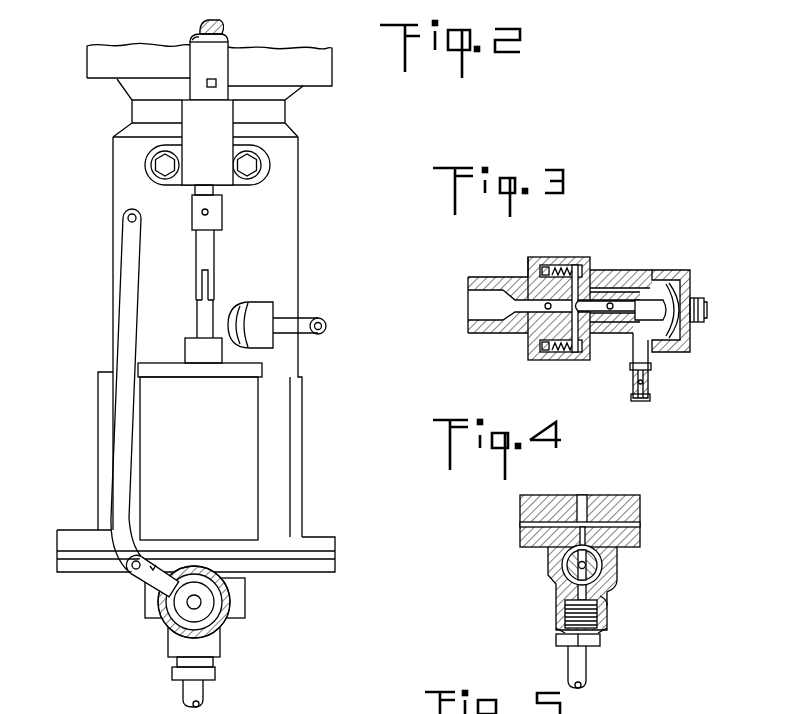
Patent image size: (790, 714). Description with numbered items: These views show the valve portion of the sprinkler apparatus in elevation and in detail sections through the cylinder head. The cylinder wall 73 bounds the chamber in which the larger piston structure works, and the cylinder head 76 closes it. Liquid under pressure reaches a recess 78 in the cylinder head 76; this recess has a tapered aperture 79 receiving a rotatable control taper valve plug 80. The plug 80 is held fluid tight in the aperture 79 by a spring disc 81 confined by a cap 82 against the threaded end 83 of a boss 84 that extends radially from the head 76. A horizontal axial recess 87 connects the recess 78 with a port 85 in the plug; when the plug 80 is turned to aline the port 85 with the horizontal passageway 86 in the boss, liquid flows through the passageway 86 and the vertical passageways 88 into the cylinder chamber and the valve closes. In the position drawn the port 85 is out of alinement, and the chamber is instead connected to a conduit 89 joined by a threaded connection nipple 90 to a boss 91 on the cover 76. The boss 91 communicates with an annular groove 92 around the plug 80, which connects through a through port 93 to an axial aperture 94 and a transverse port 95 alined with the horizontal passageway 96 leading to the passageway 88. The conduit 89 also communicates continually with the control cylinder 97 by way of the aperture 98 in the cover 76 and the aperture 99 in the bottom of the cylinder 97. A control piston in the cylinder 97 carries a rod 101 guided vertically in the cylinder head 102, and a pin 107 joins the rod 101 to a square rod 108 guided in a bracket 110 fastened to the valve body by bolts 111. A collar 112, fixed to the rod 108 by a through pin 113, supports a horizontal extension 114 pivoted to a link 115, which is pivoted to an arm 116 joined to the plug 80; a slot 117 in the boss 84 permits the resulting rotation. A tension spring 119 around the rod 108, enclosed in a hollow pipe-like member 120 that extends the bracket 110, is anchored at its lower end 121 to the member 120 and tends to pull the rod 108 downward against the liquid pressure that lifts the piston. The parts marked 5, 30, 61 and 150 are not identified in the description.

In FIG. 2, the mounting plate 5 is at (87, 54).
In FIG. 2, the housing neck flange 30 is at (125, 90).
In FIG. 2, the compartment 61 is at (243, 256).
In FIG. 2, the wall 73 is at (292, 441).
In FIG. 2, the cylinder head 76 is at (337, 580).
In FIG. 4, the cylinder head 76 is at (642, 546).
In FIG. 3, the recess 78 is at (476, 305).
In FIG. 3, the tapered aperture 79 is at (602, 336).
In FIG. 4, the tapered aperture 79 is at (604, 572).
In FIG. 2, the control taper valve plug 80 is at (210, 601).
In FIG. 3, the control taper valve plug 80 is at (605, 302).
In FIG. 4, the control taper valve plug 80 is at (566, 566).
In FIG. 3, the spring disc 81 is at (682, 296).
In FIG. 3, the cap 82 is at (692, 280).
In FIG. 3, the threaded end 83 is at (655, 270).
In FIG. 2, the boss 84 is at (226, 618).
In FIG. 3, the boss 84 is at (636, 284).
In FIG. 4, the boss 84 is at (606, 580).
In FIG. 3, the port 85 is at (520, 275).
In FIG. 3, the horizontal passageway 86 is at (548, 262).
In FIG. 3, the horizontal axial recess 87 is at (510, 296).
In FIG. 3, the vertical passageways 88 is at (556, 266).
In FIG. 2, the conduit 89 is at (206, 695).
In FIG. 4, the conduit 89 is at (588, 678).
In FIG. 2, the threaded connection nipple 90 is at (218, 673).
In FIG. 4, the threaded connection nipple 90 is at (558, 638).
In FIG. 2, the boss 91 is at (221, 651).
In FIG. 4, the boss 91 is at (562, 617).
In FIG. 3, the annular groove 92 is at (626, 348).
In FIG. 4, the annular groove 92 is at (553, 585).
In FIG. 3, the through port 93 is at (576, 360).
In FIG. 4, the through port 93 is at (553, 557).
In FIG. 3, the axial aperture 94 is at (612, 272).
In FIG. 4, the axial aperture 94 is at (600, 598).
In FIG. 3, the transverse port 95 is at (592, 292).
In FIG. 3, the horizontal passageway 96 is at (580, 265).
In FIG. 2, the control cylinder 97 is at (190, 452).
In FIG. 4, the control cylinder 97 is at (570, 488).
In FIG. 4, the aperture 98 is at (597, 536).
In FIG. 4, the aperture 99 is at (590, 516).
In FIG. 2, the rod 101 is at (204, 318).
In FIG. 2, the cylinder head 102 is at (183, 362).
In FIG. 2, the pin 107 is at (214, 291).
In FIG. 2, the square rod 108 is at (220, 26).
In FIG. 2, the bracket 110 is at (200, 141).
In FIG. 2, the bolts 111 is at (151, 163).
In FIG. 2, the collar 112 is at (194, 200).
In FIG. 2, the through pin 113 is at (209, 212).
In FIG. 2, the horizontal extension 114 is at (160, 220).
In FIG. 2, the link 115 is at (125, 290).
In FIG. 3, the link 115 is at (646, 398).
In FIG. 2, the arm 116 is at (152, 585).
In FIG. 3, the arm 116 is at (652, 366).
In FIG. 2, the slot 117 is at (166, 606).
In FIG. 3, the slot 117 is at (650, 380).
In FIG. 2, the tension spring 119 is at (222, 40).
In FIG. 2, the hollow pipe-like member 120 is at (194, 62).
In FIG. 2, the lower end 121 is at (207, 83).
In FIG. 2, the fitting 150 is at (324, 324).